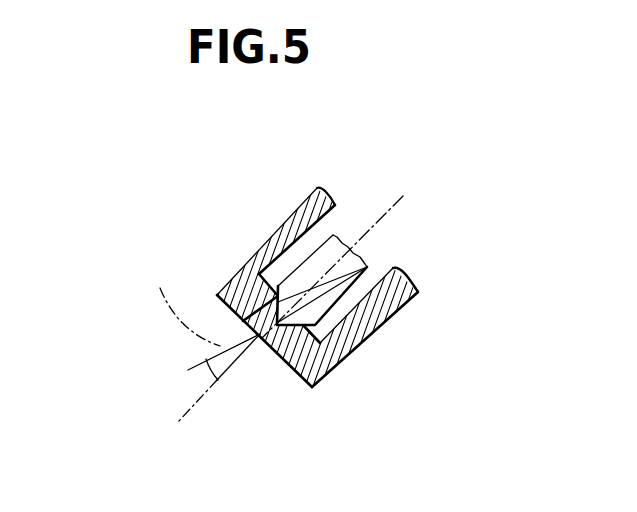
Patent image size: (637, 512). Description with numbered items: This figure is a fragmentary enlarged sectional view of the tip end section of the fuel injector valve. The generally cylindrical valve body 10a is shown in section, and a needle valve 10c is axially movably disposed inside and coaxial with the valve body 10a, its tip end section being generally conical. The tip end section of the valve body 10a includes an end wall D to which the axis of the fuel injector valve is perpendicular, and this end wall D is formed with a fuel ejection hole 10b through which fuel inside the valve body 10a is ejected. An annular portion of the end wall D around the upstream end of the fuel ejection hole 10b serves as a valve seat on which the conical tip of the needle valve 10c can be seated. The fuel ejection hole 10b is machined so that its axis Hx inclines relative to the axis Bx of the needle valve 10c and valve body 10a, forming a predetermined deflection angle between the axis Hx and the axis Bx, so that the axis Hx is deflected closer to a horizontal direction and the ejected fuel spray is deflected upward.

The valve body 10a is at (255, 254).
The fuel ejection hole 10b is at (287, 336).
The needle valve 10c is at (313, 253).
The end wall D is at (300, 375).
The axis of the needle valve and valve body Bx is at (390, 212).
The axis of the fuel ejection hole Hx is at (182, 301).